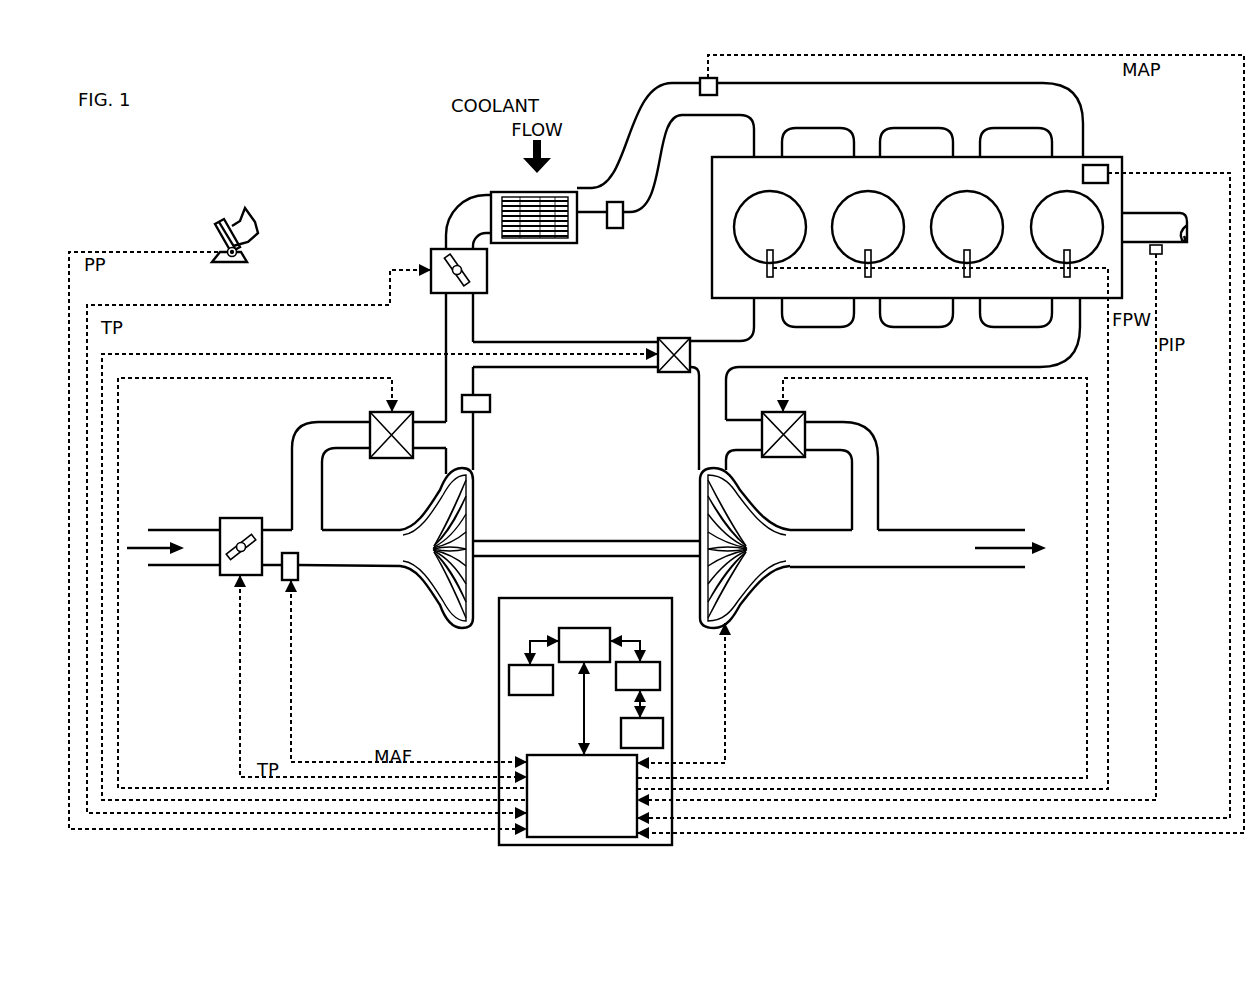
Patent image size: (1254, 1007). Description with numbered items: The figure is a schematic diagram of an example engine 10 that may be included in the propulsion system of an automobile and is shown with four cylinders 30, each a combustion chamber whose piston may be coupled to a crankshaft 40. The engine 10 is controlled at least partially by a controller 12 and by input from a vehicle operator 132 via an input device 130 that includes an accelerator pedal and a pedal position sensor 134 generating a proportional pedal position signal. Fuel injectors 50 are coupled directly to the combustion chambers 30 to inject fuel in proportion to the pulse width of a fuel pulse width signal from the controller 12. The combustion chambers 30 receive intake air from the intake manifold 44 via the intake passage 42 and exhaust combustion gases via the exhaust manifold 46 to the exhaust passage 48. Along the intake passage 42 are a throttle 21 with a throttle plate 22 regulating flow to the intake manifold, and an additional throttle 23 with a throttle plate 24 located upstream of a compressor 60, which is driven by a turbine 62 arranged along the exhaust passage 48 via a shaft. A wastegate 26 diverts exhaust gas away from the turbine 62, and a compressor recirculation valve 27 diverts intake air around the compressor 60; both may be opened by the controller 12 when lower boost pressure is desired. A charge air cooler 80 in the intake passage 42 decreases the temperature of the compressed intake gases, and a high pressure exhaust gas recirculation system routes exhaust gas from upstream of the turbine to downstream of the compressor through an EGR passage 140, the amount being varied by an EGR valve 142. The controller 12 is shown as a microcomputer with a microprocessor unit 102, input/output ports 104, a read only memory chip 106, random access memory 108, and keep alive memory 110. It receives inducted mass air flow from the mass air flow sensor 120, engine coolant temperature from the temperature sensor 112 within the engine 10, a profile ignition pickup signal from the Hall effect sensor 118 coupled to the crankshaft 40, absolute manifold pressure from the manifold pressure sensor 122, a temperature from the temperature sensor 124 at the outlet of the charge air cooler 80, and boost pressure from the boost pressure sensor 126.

The engine 10 is at (994, 185).
The controller 12 is at (522, 734).
The throttle 21 is at (432, 250).
The throttle plate 22 is at (468, 284).
The additional throttle 23 is at (222, 518).
The throttle plate 24 is at (250, 535).
The wastegate 26 is at (808, 421).
The compressor recirculation valve 27 is at (370, 421).
The cylinder 30 is at (760, 237).
The crankshaft 40 is at (1160, 213).
The intake passage 42 is at (186, 558).
The intake manifold 44 is at (782, 114).
The exhaust manifold 46 is at (756, 360).
The exhaust passage 48 is at (824, 558).
The fuel injector 50 is at (768, 278).
The compressor 60 is at (425, 601).
The turbine 62 is at (745, 498).
The charge air cooler 80 is at (498, 192).
The microprocessor unit 102 is at (557, 638).
The input/output ports 104 is at (596, 832).
The read only memory chip 106 is at (509, 686).
The random access memory 108 is at (660, 669).
The keep alive memory 110 is at (663, 726).
The temperature sensor 112 is at (1103, 165).
The Hall effect sensor 118 is at (1158, 256).
The mass air flow sensor 120 is at (298, 573).
The manifold pressure sensor 122 is at (702, 81).
The temperature sensor 124 is at (616, 229).
The boost pressure sensor 126 is at (490, 404).
The input device 130 is at (213, 231).
The vehicle operator 132 is at (258, 219).
The pedal position sensor 134 is at (241, 251).
The EGR passage 140 is at (568, 343).
The EGR valve 142 is at (682, 338).